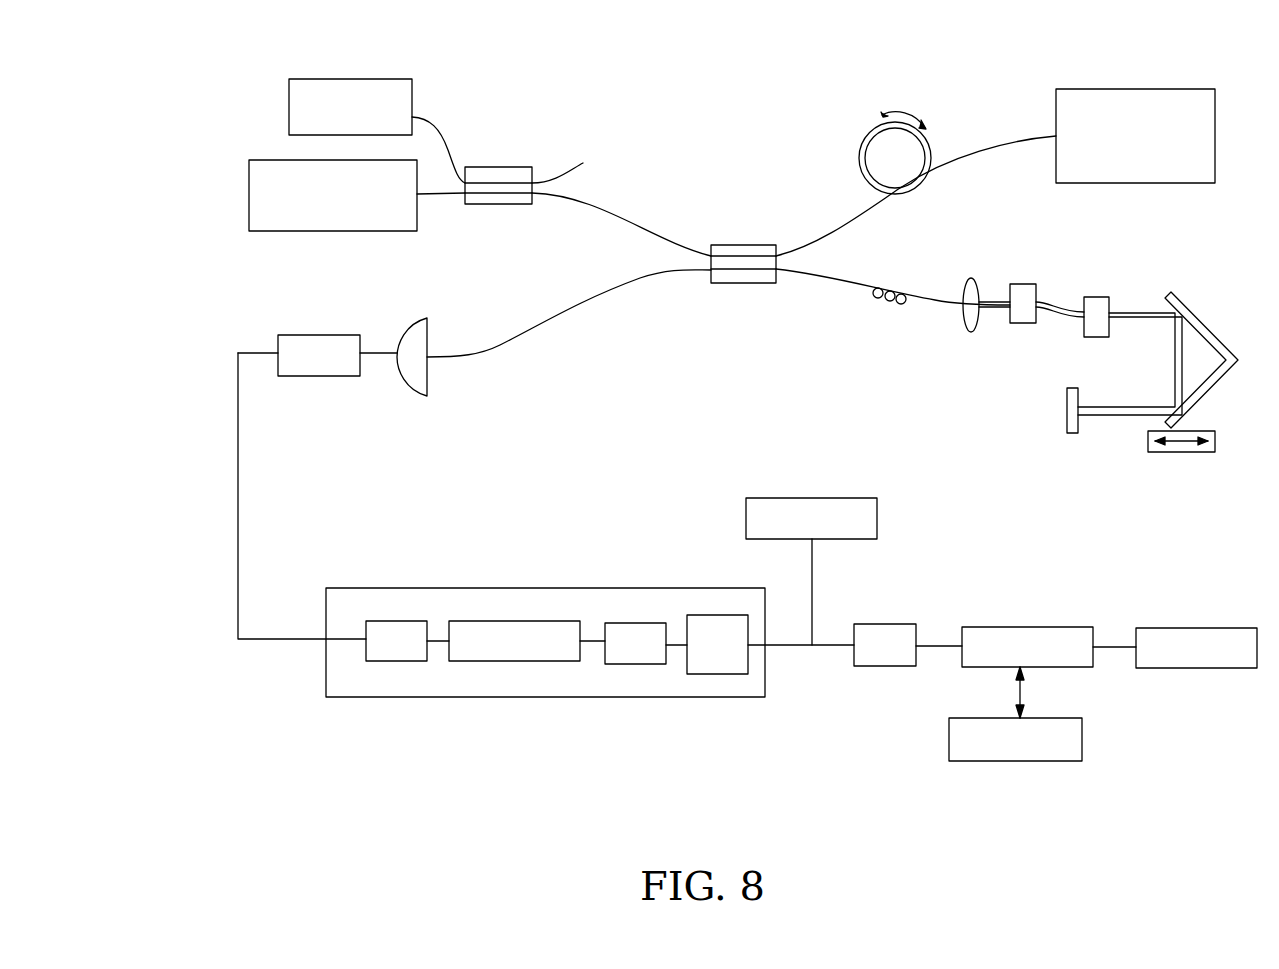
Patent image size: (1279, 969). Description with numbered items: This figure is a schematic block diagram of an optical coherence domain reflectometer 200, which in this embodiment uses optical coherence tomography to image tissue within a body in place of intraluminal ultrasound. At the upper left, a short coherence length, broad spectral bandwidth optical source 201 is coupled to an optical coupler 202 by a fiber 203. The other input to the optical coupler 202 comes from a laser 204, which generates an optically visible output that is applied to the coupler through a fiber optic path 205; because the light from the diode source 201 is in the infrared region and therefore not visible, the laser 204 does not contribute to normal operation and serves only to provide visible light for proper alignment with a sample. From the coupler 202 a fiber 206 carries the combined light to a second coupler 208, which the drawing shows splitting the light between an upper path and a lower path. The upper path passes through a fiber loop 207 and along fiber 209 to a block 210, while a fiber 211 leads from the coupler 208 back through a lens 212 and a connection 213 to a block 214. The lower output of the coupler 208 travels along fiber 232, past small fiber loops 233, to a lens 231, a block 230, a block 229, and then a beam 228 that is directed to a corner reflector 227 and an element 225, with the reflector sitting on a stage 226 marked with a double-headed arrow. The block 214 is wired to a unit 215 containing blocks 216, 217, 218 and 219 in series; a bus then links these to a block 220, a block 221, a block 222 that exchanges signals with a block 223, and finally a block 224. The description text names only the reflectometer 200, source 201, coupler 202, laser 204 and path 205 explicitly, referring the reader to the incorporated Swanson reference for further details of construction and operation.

The optical coherence domain reflectometer 200 is at (695, 130).
The optical source 201 is at (325, 232).
The optical coupler 202 is at (512, 167).
The optical fiber 203 is at (440, 197).
The laser 204 is at (350, 79).
The fiber optic path 205 is at (443, 140).
The optical fiber 206 is at (598, 223).
The fiber loop polarization controller 207 is at (866, 130).
The optical fiber coupler 208 is at (748, 245).
The optical fiber 209 is at (992, 153).
The photodetector 210 is at (1145, 89).
The optical fiber 211 is at (572, 318).
The lens 212 is at (415, 396).
The connection line 213 is at (380, 350).
The photodetector 214 is at (335, 376).
The signal processing unit 215 is at (474, 697).
The amplifier 216 is at (390, 621).
The filter 217 is at (508, 621).
The A/D converter 218 is at (630, 623).
The processor 219 is at (713, 674).
The memory 220 is at (810, 498).
The interface 221 is at (878, 624).
The computer 222 is at (1008, 627).
The storage device 223 is at (1082, 735).
The display 224 is at (1158, 628).
The mirror 225 is at (1067, 398).
The translation stage 226 is at (1178, 452).
The corner reflector prism 227 is at (1193, 308).
The light beam 228 is at (1140, 292).
The polarizer 229 is at (1095, 337).
The beam splitter 230 is at (1020, 323).
The collimating lens 231 is at (968, 278).
The optical fiber 232 is at (938, 297).
The fiber loops 233 is at (885, 302).